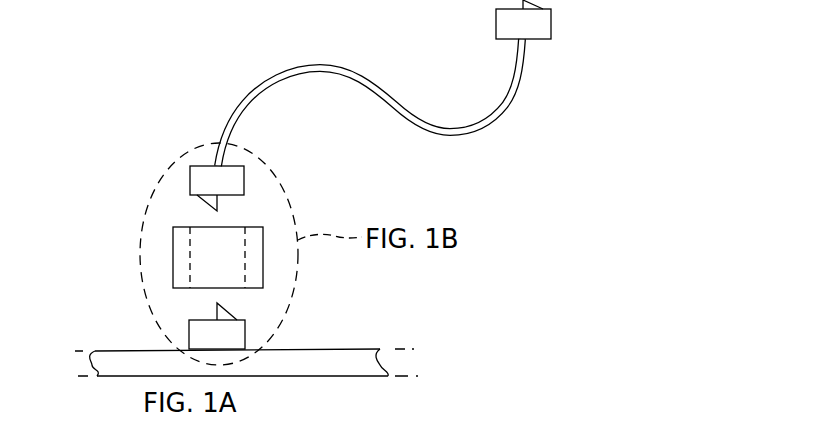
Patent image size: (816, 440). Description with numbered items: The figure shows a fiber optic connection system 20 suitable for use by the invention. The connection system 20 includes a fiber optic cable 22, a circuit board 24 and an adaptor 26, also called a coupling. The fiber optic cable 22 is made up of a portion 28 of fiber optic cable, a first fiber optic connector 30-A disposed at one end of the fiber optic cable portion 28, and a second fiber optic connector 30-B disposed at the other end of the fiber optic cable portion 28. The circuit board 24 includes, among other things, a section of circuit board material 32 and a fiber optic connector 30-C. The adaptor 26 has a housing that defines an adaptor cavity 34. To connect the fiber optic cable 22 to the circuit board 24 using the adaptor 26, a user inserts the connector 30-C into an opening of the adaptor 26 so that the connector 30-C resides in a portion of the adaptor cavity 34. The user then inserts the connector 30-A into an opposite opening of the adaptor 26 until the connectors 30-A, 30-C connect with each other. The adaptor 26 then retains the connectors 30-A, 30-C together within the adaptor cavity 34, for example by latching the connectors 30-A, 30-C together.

The fiber optic connection system 20 is at (597, 53).
The fiber optic cable 22 is at (256, 50).
The circuit board 24 is at (308, 303).
The adaptor 26 is at (170, 257).
The portion of fiber optic cable 28 is at (457, 133).
The first fiber optic connector 30-A is at (190, 182).
The second fiber optic connector 30-B is at (496, 20).
The fiber optic connector 30-C is at (189, 333).
The section of circuit board material 32 is at (328, 377).
The adaptor cavity 34 is at (217, 257).